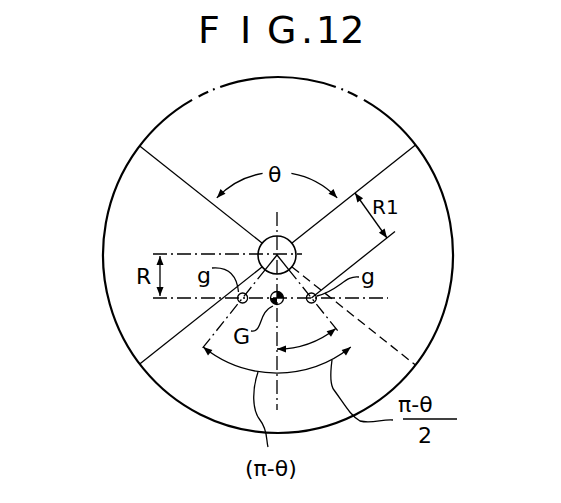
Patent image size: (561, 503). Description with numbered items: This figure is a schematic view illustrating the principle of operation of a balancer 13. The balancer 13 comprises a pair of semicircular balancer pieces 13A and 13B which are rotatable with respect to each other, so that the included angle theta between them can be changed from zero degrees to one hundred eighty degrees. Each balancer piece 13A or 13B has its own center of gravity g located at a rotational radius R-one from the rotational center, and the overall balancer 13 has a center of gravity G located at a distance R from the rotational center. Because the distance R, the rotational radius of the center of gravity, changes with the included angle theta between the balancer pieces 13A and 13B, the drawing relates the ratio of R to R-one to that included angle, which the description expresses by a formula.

The balancer 13 is at (443, 173).
The semicircular balancer piece 13A is at (418, 322).
The semicircular balancer piece 13B is at (124, 320).